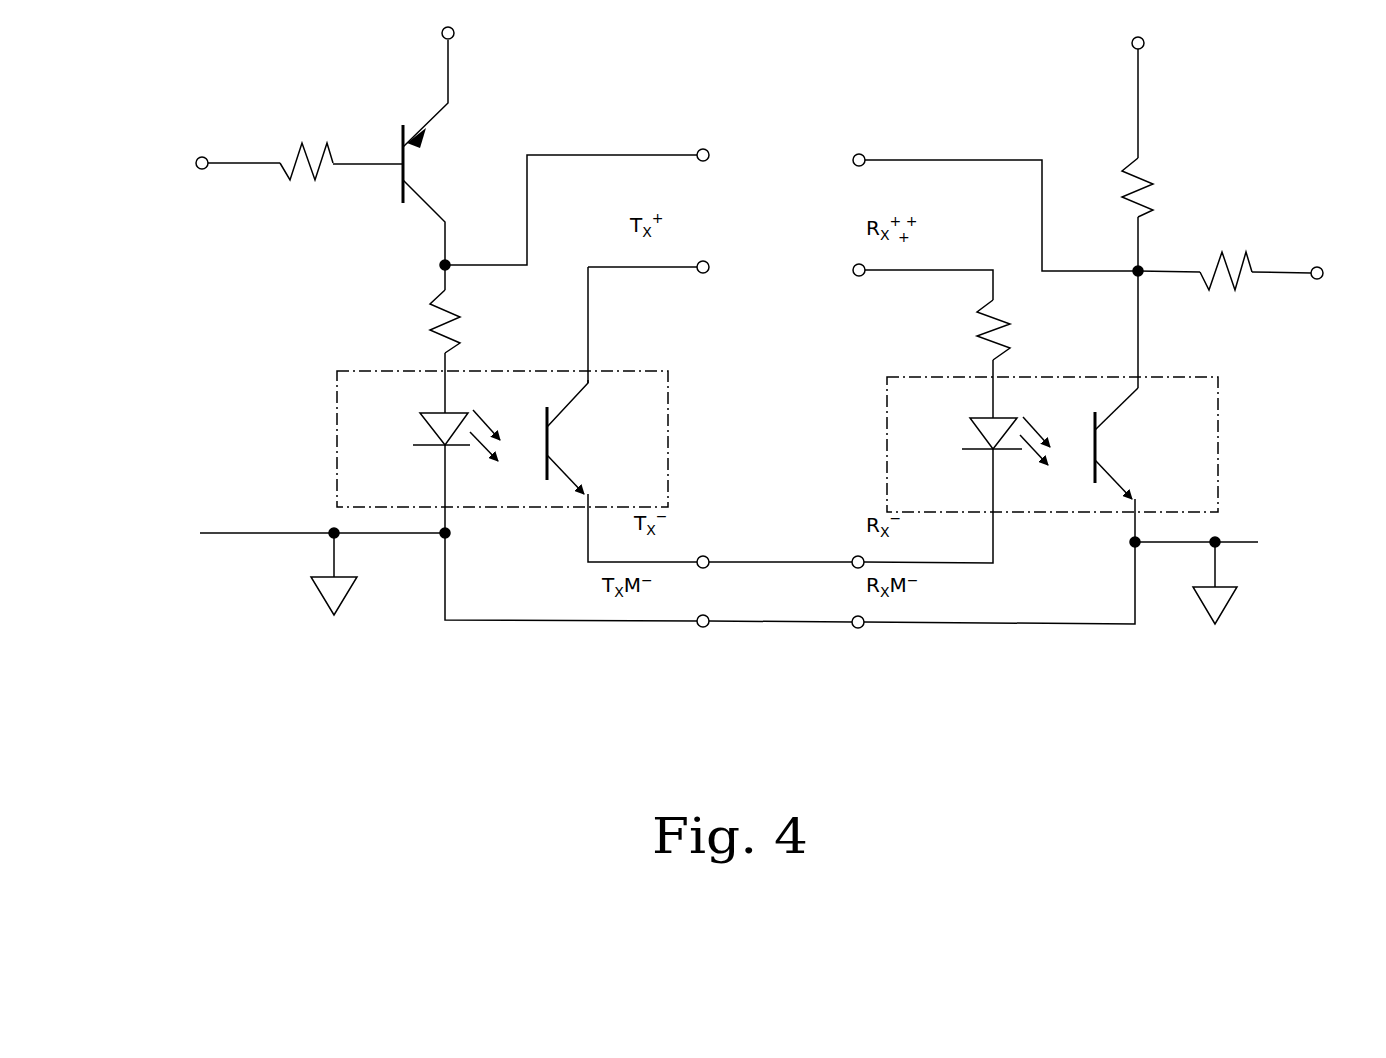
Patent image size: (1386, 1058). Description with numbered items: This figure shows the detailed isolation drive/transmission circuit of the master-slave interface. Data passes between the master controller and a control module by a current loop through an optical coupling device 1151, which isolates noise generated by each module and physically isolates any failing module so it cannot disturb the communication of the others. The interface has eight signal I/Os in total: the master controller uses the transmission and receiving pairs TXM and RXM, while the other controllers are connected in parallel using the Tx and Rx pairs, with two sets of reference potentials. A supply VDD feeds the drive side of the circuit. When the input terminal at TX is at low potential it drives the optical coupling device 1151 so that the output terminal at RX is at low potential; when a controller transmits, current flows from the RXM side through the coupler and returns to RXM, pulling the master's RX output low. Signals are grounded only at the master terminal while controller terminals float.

The optical coupling device 1151 is at (326, 437).
The input terminal at Tx TX is at (274, 141).
The output terminal at Rx RX is at (1230, 255).
The supply voltage terminal VDD is at (821, 31).
The TxM transmission I/Os TXM is at (577, 183).
The RxM receiving I/Os RXM is at (995, 189).